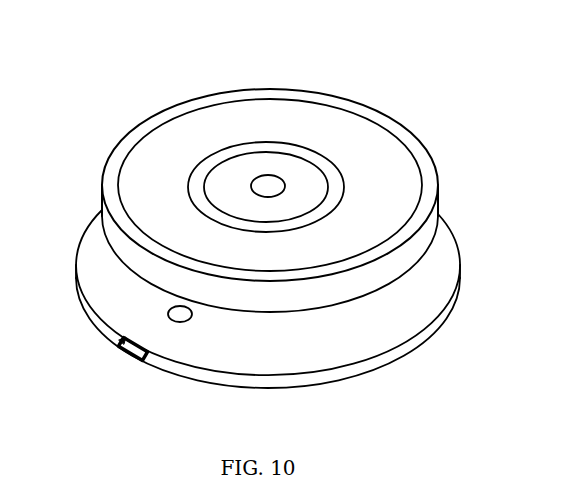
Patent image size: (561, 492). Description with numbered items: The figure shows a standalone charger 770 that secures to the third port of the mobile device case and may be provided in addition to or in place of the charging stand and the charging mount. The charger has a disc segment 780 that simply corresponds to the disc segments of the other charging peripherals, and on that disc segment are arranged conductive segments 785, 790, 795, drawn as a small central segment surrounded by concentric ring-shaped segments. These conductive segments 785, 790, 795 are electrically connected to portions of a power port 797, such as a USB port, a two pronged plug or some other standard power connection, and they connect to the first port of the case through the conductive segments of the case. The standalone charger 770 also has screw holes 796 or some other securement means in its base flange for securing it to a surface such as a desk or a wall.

The standalone charger 770 is at (267, 212).
The disc segment 780 is at (155, 110).
The conductive segment 785 is at (278, 181).
The conductive segment 790 is at (340, 187).
The conductive segment 795 is at (415, 230).
The screw holes 796 is at (165, 317).
The power port 797 is at (125, 352).